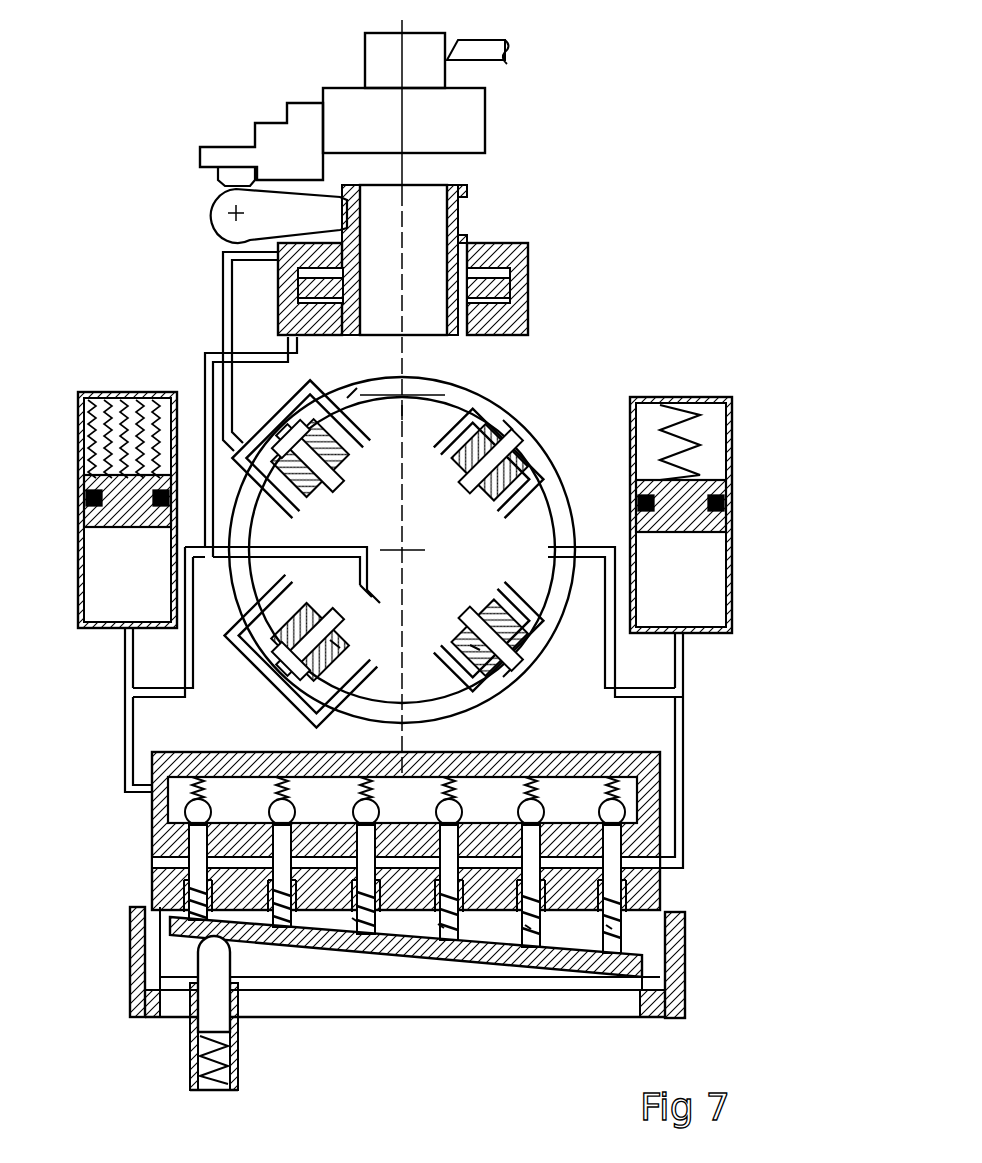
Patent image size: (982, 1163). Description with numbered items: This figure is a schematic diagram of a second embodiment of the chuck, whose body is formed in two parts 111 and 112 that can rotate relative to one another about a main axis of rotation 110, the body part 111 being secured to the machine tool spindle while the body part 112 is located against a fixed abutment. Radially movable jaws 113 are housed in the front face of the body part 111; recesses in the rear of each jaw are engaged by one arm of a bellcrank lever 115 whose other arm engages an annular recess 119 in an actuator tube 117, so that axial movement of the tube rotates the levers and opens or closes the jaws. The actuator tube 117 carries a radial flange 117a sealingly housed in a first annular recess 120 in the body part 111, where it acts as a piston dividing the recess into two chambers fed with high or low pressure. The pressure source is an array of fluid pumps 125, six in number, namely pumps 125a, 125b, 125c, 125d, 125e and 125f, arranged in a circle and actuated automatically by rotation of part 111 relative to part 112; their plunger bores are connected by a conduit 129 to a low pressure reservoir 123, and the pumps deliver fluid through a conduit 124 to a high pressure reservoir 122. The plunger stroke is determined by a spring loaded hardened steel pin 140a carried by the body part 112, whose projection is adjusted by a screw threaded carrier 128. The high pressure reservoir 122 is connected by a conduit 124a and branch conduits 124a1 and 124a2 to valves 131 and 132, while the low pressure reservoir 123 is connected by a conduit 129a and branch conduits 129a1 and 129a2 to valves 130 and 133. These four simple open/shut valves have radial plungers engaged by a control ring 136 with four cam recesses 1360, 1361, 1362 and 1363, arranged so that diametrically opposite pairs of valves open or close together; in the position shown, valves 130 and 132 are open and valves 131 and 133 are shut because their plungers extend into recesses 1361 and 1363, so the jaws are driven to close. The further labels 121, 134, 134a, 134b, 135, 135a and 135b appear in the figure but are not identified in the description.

The main axis of rotation 110 is at (400, 68).
The drive block 121 is at (478, 112).
The jaws 113 is at (290, 130).
The bellcrank lever 115 is at (223, 202).
The annular recess 119 is at (460, 213).
The actuator tube 117 is at (480, 243).
The radial flange 117a is at (500, 312).
The chuck body part 111 is at (528, 272).
The first annular recess 120 is at (492, 335).
The conduit 135 is at (225, 268).
The conduit 134 is at (210, 372).
The control ring 136 is at (557, 593).
The recess 1360 is at (503, 677).
The recess 1361 is at (277, 655).
The recess 1362 is at (347, 398).
The recess 1363 is at (513, 430).
The valve 132 is at (343, 470).
The valve 133 is at (518, 462).
The valve stem 135a is at (287, 493).
The valve housing 135b is at (280, 415).
The valve housing 134a is at (283, 687).
The valve stem 134b is at (340, 600).
The valve 131 is at (333, 643).
The valve 130 is at (478, 650).
The conduit 129a is at (640, 695).
The branch conduit 129a1 is at (490, 655).
The branch conduit 129a2 is at (533, 507).
The conduit 124a is at (172, 690).
The branch conduit 124a1 is at (363, 585).
The branch conduit 124a2 is at (363, 523).
The conduit 124 is at (130, 763).
The conduit 129 is at (680, 793).
The high pressure reservoir 122 is at (120, 603).
The low pressure reservoir 123 is at (683, 605).
The array of fluid pumps 125 is at (165, 845).
The pump 125a is at (177, 876).
The pump 125b is at (172, 923).
The pump 125c is at (352, 918).
The pump 125d is at (440, 920).
The pump 125e is at (528, 920).
The pump 125f is at (610, 883).
The chuck body part 112 is at (673, 968).
The spring loaded hardened steel pin 140a is at (205, 962).
The screw threaded carrier 128 is at (190, 1060).